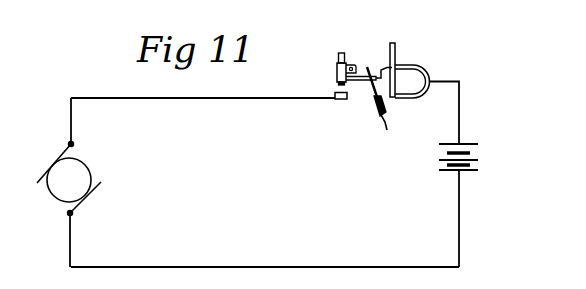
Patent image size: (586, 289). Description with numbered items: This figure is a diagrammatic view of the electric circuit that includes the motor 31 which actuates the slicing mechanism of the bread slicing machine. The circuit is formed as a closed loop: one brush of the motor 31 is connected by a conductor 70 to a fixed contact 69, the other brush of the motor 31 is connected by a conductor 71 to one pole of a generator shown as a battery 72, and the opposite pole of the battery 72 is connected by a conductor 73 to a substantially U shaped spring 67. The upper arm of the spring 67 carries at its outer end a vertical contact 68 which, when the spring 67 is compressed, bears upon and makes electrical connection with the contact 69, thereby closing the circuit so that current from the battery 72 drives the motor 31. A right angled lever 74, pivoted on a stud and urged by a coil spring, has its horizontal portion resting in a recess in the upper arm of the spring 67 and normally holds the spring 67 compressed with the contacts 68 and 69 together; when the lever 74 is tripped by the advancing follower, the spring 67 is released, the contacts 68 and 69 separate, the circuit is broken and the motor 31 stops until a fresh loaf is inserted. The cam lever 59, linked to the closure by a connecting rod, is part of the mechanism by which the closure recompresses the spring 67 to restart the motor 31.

The motor 31 is at (92, 172).
The cam lever 59 is at (390, 49).
The U shaped spring 67 is at (433, 59).
The vertical contact 68 is at (334, 82).
The contact 69 is at (347, 100).
The conductor 70 is at (249, 99).
The conductor 71 is at (223, 266).
The battery 72 is at (478, 160).
The conductor 73 is at (460, 98).
The right angled lever 74 is at (376, 107).